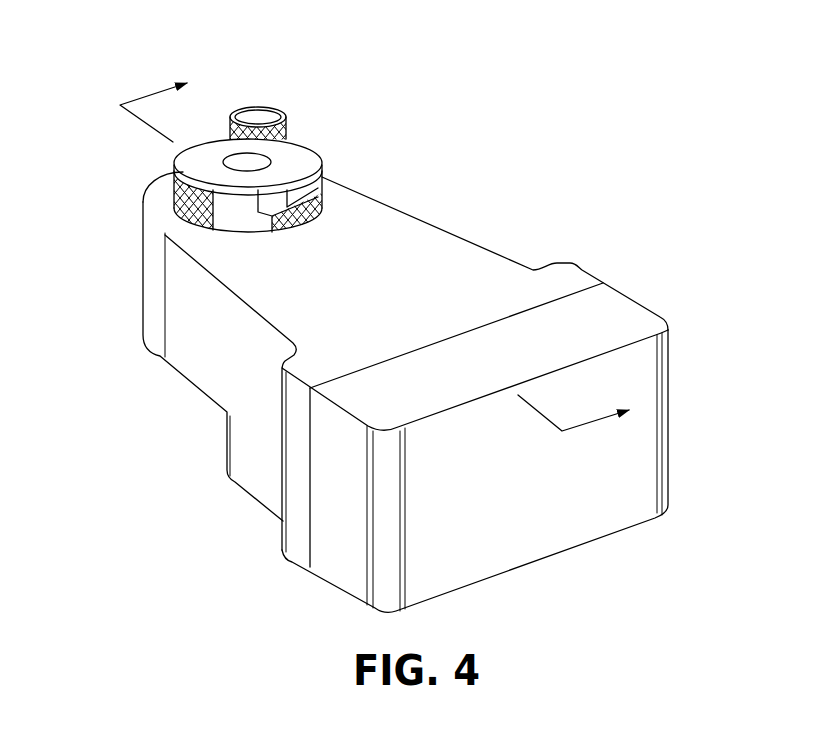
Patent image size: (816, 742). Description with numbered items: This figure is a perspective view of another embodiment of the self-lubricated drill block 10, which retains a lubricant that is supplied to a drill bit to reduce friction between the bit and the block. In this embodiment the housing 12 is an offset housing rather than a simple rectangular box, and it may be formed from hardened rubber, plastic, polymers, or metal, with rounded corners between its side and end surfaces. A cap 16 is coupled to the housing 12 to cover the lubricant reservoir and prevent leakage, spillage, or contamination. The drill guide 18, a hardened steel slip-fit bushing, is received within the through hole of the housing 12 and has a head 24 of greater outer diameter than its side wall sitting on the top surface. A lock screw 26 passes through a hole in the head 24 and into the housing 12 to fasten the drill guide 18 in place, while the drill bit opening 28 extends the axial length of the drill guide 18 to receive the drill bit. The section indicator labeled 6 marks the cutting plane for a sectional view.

The self-lubricated drill block 10 is at (370, 324).
The housing 12 is at (135, 293).
The cap 16 is at (618, 312).
The drill guide 18 is at (229, 134).
The head 24 is at (192, 160).
The lock screw 26 is at (262, 113).
The drill bit opening 28 is at (236, 164).
The section line 6- 6 is at (376, 249).